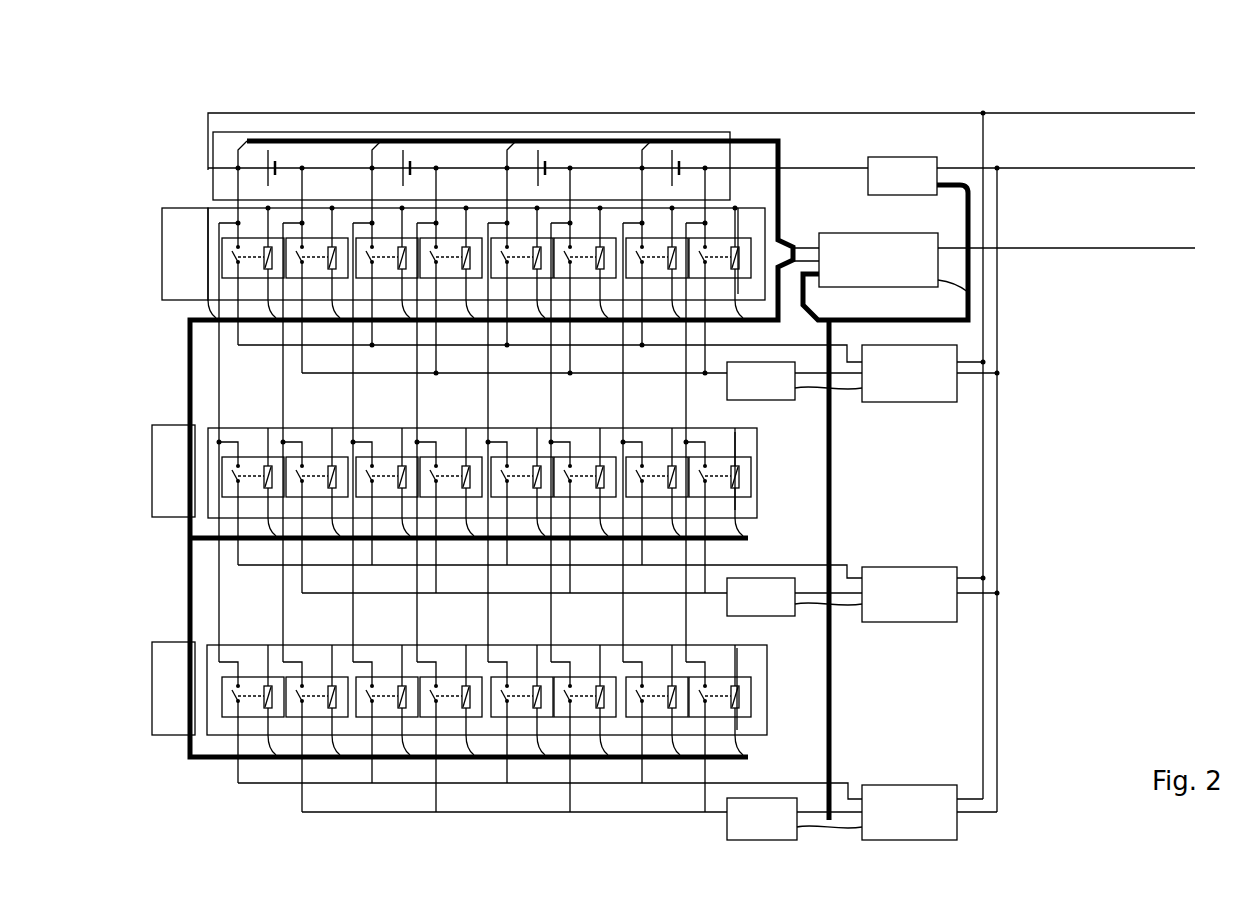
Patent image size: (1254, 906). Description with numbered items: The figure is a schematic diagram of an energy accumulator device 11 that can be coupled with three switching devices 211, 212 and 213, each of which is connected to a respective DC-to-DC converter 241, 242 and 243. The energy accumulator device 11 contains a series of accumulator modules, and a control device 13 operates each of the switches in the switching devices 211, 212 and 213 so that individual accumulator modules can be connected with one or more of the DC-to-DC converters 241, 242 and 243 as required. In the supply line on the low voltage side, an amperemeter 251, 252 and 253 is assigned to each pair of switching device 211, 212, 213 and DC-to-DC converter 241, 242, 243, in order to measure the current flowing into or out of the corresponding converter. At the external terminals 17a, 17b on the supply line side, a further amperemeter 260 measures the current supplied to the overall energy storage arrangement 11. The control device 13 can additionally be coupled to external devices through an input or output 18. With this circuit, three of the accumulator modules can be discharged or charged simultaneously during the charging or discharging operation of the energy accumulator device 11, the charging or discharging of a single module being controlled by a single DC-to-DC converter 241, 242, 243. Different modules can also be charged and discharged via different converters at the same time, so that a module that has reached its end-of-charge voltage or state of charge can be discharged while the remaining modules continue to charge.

The energy accumulator device 11 is at (455, 130).
The control device 13 is at (968, 290).
The external terminal 17a is at (1130, 168).
The external terminal 17b is at (1143, 113).
The input or output 18 is at (1085, 250).
The switching device 211 is at (176, 300).
The switching device 212 is at (172, 517).
The switching device 213 is at (182, 735).
The DC-to-DC converter 241 is at (929, 402).
The DC-to-DC converter 242 is at (890, 567).
The DC-to-DC converter 243 is at (922, 785).
The amperemeter 251 is at (793, 400).
The amperemeter 252 is at (782, 578).
The amperemeter 253 is at (727, 832).
The amperemeter 260 is at (888, 157).